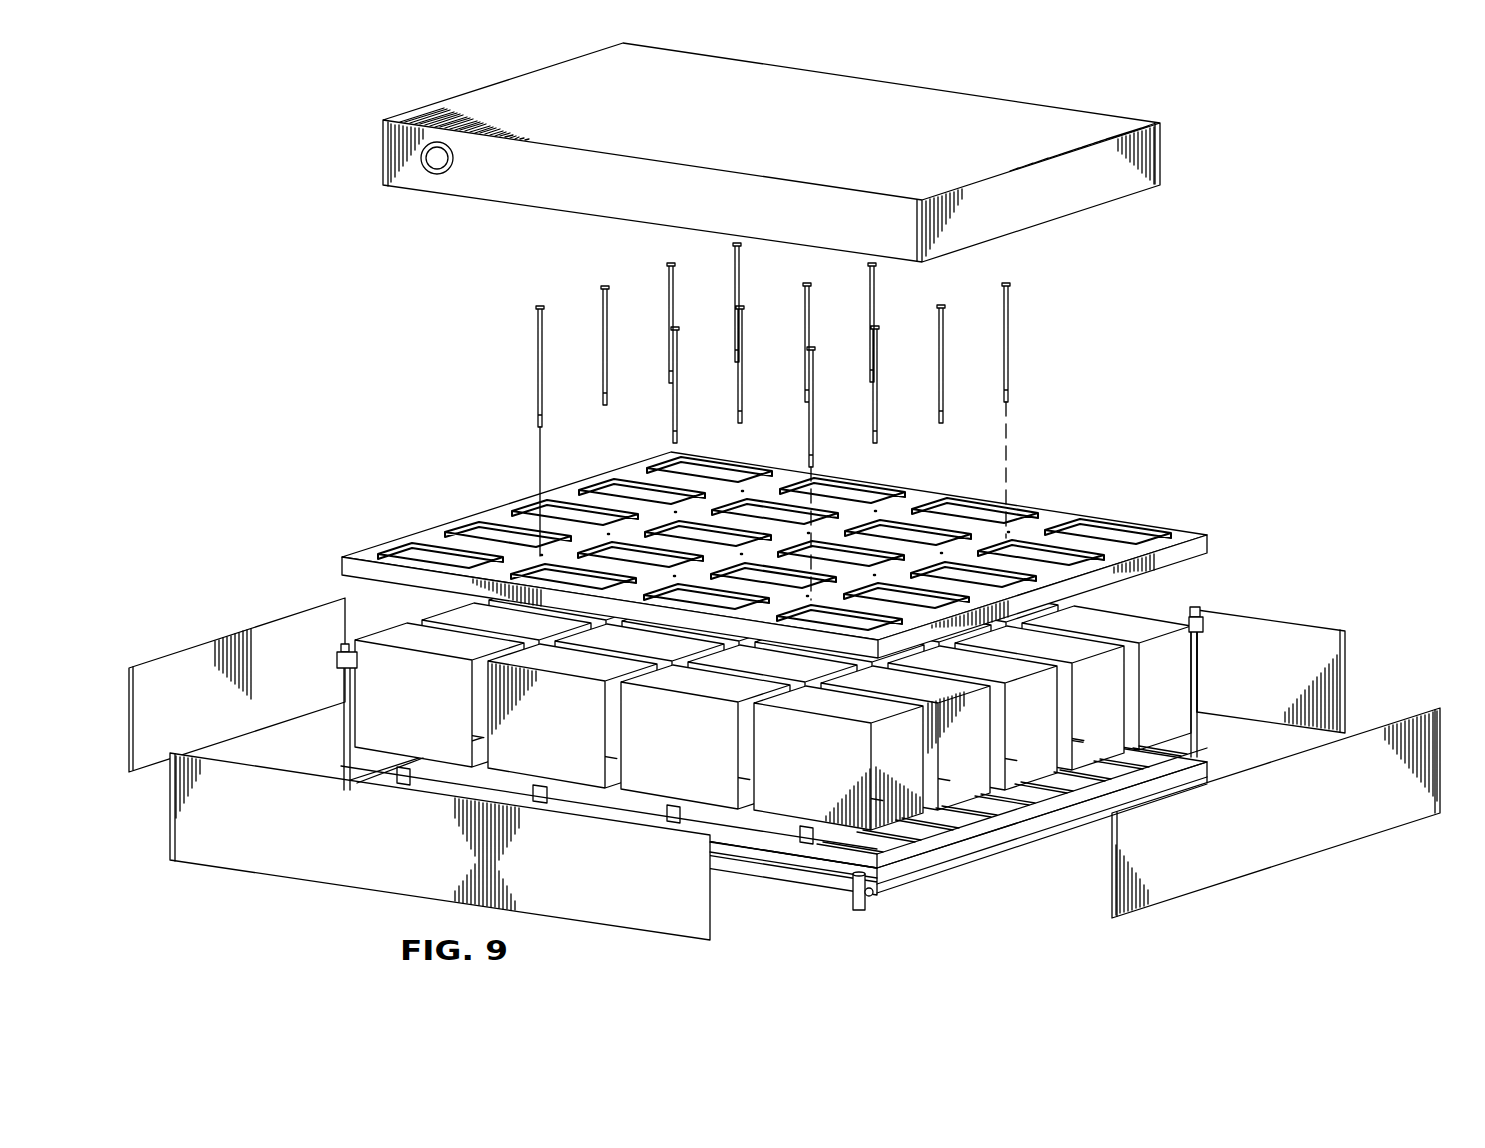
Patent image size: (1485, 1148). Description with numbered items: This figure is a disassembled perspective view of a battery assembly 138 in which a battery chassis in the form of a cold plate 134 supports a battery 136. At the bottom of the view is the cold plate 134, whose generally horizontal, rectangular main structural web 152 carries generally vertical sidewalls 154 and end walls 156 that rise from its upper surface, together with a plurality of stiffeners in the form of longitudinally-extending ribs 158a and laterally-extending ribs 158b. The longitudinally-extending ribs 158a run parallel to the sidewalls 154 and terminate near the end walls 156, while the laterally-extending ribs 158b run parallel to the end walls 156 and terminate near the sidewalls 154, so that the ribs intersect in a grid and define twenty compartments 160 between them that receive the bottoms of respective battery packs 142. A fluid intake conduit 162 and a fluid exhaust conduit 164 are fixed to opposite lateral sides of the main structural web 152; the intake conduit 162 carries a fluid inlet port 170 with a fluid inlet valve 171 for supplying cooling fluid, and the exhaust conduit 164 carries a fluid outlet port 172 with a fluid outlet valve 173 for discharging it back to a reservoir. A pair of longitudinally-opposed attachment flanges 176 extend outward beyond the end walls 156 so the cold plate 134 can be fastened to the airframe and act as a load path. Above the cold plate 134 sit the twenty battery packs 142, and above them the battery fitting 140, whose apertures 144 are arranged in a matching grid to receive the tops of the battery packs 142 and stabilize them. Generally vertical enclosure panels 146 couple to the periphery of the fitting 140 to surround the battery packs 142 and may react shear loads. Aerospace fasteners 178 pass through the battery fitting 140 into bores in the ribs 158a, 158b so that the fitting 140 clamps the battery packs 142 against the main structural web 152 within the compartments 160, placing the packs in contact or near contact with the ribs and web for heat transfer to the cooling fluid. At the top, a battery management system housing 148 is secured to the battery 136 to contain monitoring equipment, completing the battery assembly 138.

The cold plate 134 is at (996, 873).
The battery 136 is at (1206, 692).
The battery assembly 138 is at (215, 106).
The battery fitting 140 is at (497, 516).
The battery packs 142 is at (1186, 661).
The apertures 144 is at (428, 551).
The enclosure panels 146 is at (182, 652).
The battery management system housing 148 is at (985, 104).
The main structural web 152 is at (840, 858).
The sidewalls 154 is at (766, 861).
The end walls 156 is at (370, 770).
The longitudinally-extending ribs 158a is at (572, 800).
The laterally-extending ribs 158b is at (776, 840).
The compartments 160 is at (730, 838).
The fluid intake conduit 162 is at (735, 884).
The fluid exhaust conduit 164 is at (1196, 734).
The fluid inlet port 170 is at (345, 642).
The fluid inlet valve 171 is at (335, 660).
The fluid outlet port 172 is at (1194, 607).
The fluid outlet valve 173 is at (1205, 620).
The attachment flanges 176 is at (1020, 858).
The aerospace fasteners 178 is at (536, 366).